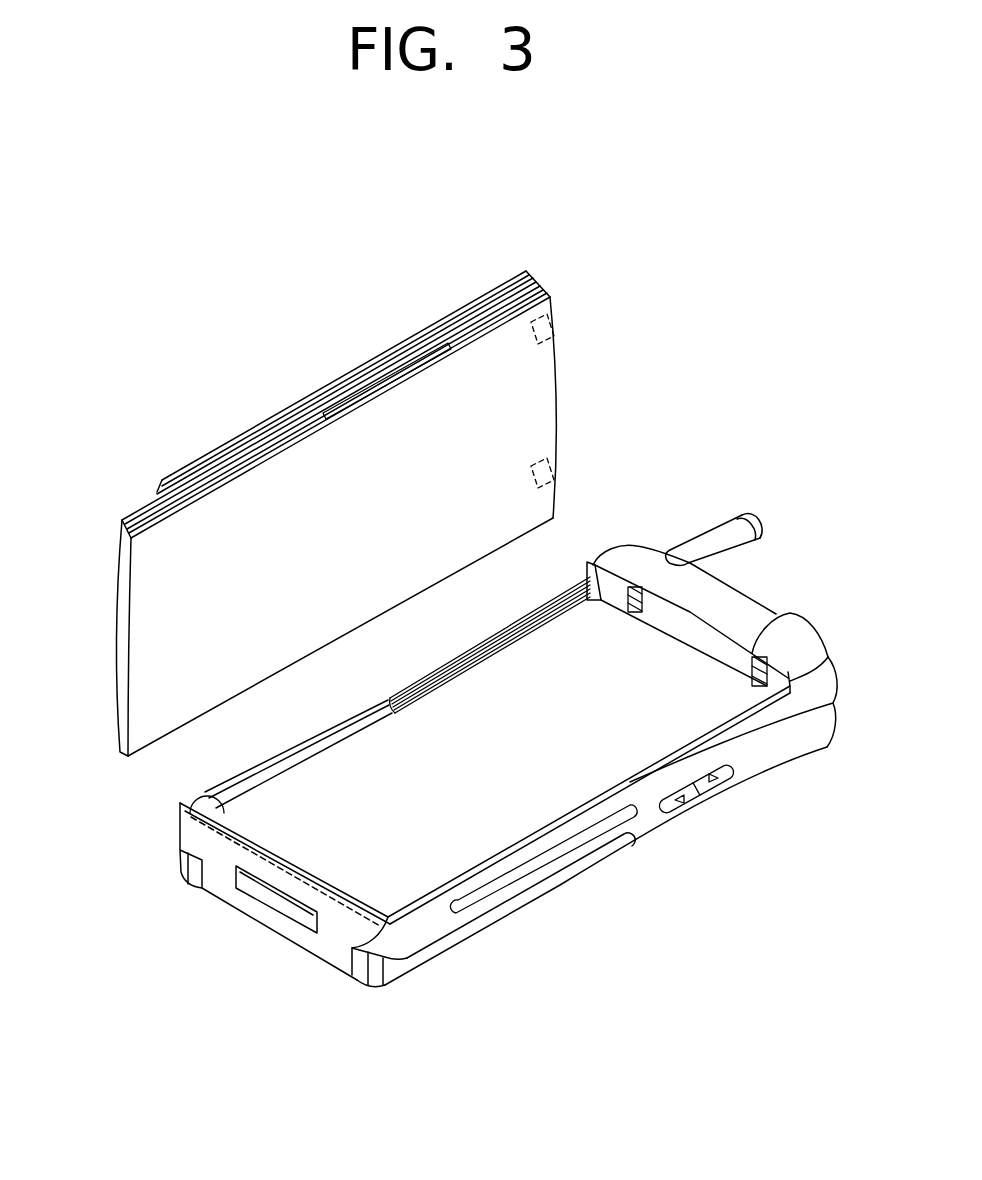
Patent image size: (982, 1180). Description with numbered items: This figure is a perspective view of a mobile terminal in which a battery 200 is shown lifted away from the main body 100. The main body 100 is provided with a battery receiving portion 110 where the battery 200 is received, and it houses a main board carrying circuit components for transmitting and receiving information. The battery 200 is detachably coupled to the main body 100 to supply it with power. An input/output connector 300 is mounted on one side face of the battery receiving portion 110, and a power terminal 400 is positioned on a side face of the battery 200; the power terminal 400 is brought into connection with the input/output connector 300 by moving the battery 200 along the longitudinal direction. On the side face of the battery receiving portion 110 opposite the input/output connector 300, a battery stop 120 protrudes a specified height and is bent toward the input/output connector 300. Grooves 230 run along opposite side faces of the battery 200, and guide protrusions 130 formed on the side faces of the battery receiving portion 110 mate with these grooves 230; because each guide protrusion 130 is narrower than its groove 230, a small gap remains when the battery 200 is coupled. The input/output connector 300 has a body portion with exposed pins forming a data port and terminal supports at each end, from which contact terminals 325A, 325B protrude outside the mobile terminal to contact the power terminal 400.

The main body 100 is at (775, 771).
The battery receiving portion 110 is at (512, 818).
The battery stop 120 is at (190, 794).
The guide protrusions 130 is at (495, 650).
The battery 200 is at (337, 363).
The grooves 230 is at (438, 352).
The input/output connector 300 is at (622, 593).
The contact terminal 325A is at (634, 586).
The contact terminal 325B is at (757, 655).
The power terminal 400 is at (557, 463).